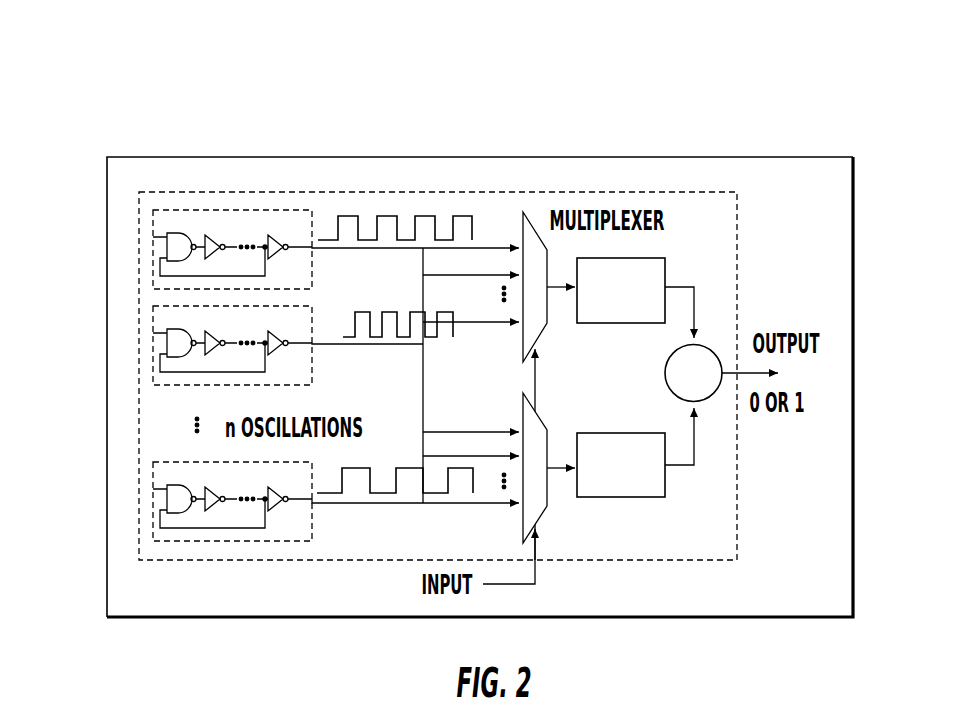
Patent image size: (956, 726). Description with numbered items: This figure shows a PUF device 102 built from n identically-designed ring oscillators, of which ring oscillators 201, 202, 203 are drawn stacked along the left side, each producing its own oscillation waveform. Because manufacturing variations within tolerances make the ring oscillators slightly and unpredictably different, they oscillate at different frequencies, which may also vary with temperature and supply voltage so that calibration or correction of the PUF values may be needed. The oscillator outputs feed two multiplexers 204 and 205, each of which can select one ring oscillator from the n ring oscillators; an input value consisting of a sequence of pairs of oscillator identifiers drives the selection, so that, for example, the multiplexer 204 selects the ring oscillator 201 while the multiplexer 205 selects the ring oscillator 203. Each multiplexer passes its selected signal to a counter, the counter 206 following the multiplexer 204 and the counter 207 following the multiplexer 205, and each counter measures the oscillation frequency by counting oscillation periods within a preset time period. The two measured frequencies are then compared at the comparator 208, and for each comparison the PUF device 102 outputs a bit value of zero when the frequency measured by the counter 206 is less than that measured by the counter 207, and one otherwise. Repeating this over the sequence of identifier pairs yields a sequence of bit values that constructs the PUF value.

The PUF device 102 is at (165, 84).
The ring oscillator 201 is at (152, 247).
The ring oscillator 202 is at (152, 343).
The ring oscillator 203 is at (152, 500).
The multiplexer 204 is at (555, 335).
The multiplexer 205 is at (555, 512).
The counter 206 is at (671, 254).
The counter 207 is at (664, 506).
The comparator 208 is at (720, 410).